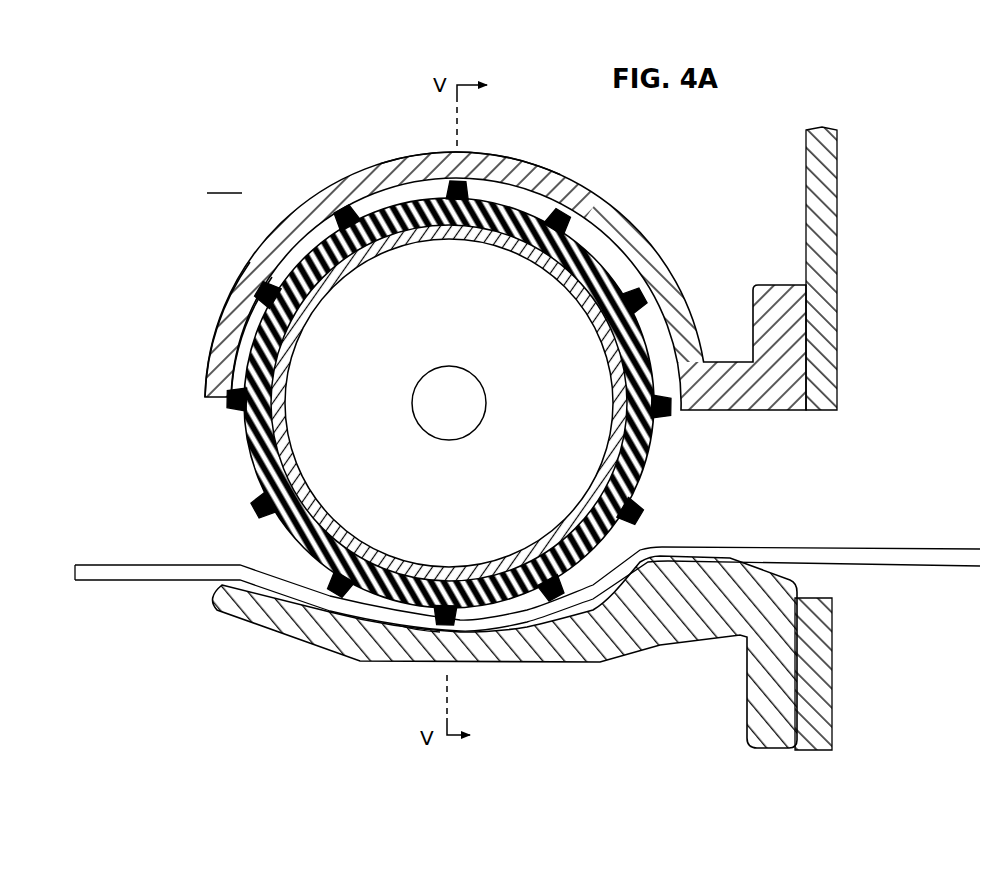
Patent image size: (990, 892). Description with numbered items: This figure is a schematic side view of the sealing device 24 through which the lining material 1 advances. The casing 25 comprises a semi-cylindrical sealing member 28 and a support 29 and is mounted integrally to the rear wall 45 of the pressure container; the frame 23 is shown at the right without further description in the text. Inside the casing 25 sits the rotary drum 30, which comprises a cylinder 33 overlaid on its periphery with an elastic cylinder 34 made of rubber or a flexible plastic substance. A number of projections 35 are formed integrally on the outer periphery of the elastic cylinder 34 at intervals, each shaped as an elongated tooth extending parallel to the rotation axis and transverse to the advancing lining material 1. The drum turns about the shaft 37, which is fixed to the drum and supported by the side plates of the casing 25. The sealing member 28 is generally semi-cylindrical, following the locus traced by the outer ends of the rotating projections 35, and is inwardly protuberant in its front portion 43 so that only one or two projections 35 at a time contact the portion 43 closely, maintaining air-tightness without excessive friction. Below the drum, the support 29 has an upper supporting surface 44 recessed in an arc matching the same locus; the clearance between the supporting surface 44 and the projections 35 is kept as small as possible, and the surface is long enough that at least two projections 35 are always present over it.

The lining material 1 is at (142, 573).
The frame 23 is at (808, 460).
The sealing device 24 is at (224, 181).
The casing 25 is at (364, 167).
The sealing member 28 is at (500, 153).
The support 29 is at (525, 648).
The rotary drum 30 is at (409, 403).
The cylinder 33 is at (380, 250).
The elastic cylinder 34 is at (497, 236).
The projections 35 is at (567, 220).
The shaft 37 is at (476, 403).
The protuberant portion 43 is at (232, 330).
The supporting surface 44 is at (415, 628).
The rear wall 45 is at (822, 376).